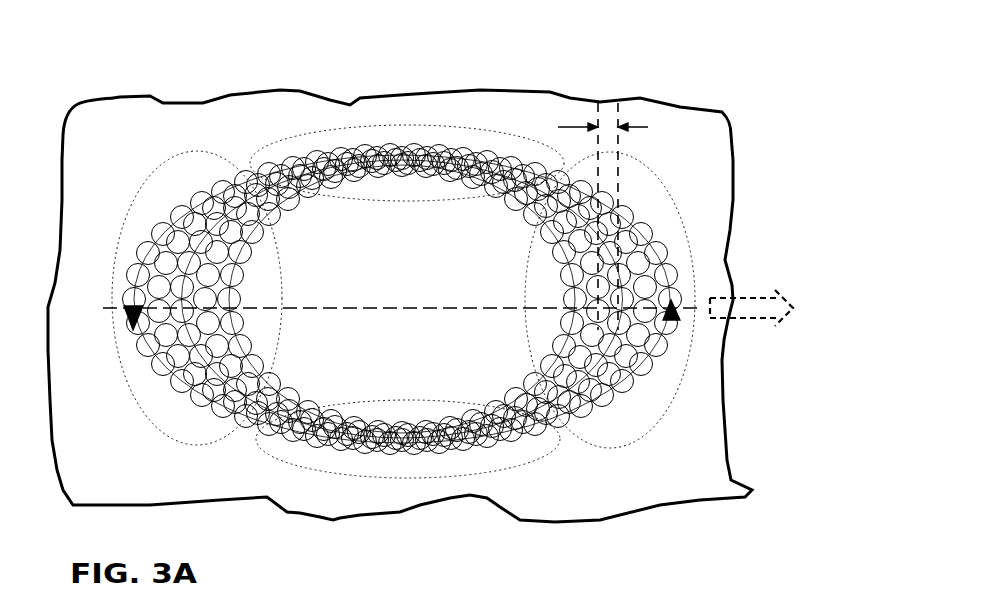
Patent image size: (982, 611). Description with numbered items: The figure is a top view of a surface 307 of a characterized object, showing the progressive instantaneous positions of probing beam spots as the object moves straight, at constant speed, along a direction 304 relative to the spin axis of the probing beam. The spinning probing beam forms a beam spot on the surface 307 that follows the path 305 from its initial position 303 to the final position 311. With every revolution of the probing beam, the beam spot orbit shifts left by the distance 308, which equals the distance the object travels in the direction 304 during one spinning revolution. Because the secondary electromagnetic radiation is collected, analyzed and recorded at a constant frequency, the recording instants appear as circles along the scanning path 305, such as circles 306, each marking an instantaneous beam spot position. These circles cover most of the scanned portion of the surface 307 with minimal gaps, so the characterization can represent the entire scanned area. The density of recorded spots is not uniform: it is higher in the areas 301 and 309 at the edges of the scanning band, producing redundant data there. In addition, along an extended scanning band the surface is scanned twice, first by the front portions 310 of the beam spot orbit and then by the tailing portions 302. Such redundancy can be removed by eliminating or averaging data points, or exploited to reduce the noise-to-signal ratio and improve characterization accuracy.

The area of the scanning band 301 is at (518, 467).
The tailing portions of the beam spot orbit 302 is at (670, 407).
The initial position 303 is at (674, 322).
The direction 304 is at (757, 318).
The path 305 is at (633, 240).
The circles 306 is at (627, 203).
The surface 307 is at (678, 142).
The distance 308 is at (612, 132).
The area of the scanning band 309 is at (403, 126).
The front portions of the beam spot orbit 310 is at (195, 152).
The final position 311 is at (130, 308).